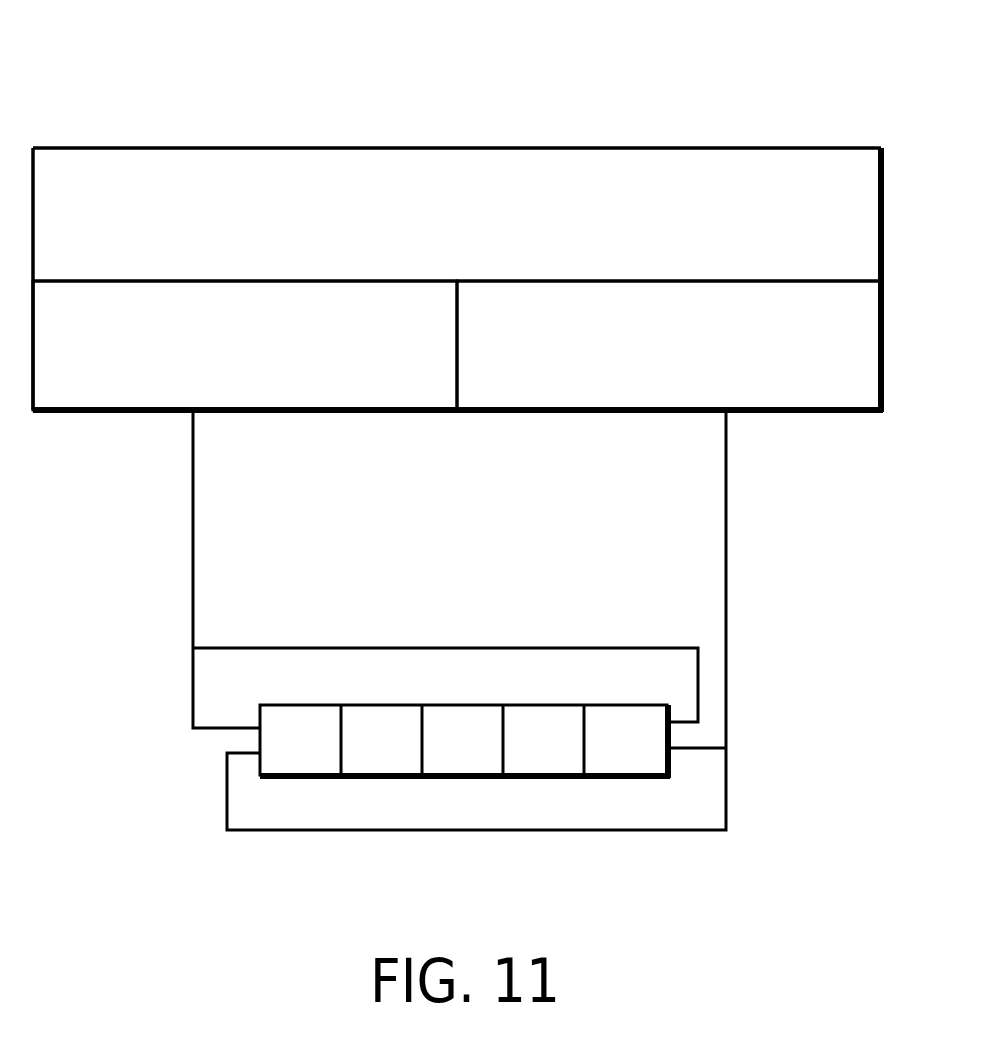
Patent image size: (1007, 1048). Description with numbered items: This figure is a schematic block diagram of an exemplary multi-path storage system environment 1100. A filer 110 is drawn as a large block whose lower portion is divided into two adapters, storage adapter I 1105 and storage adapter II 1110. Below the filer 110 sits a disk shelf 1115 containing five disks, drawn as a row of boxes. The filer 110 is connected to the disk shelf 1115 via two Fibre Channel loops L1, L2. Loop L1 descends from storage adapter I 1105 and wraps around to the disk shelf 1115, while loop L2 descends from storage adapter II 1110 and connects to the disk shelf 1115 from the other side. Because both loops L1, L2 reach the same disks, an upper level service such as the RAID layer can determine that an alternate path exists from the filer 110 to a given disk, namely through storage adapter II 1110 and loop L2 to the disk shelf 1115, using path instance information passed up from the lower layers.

The storage system environment 1100 is at (820, 110).
The filer 110 is at (533, 237).
The storage adapter I 1105 is at (282, 386).
The storage adapter II 1110 is at (702, 386).
The disk shelf 1115 is at (258, 740).
The Fibre Channel loop L1 is at (193, 533).
The Fibre Channel loop L2 is at (726, 530).